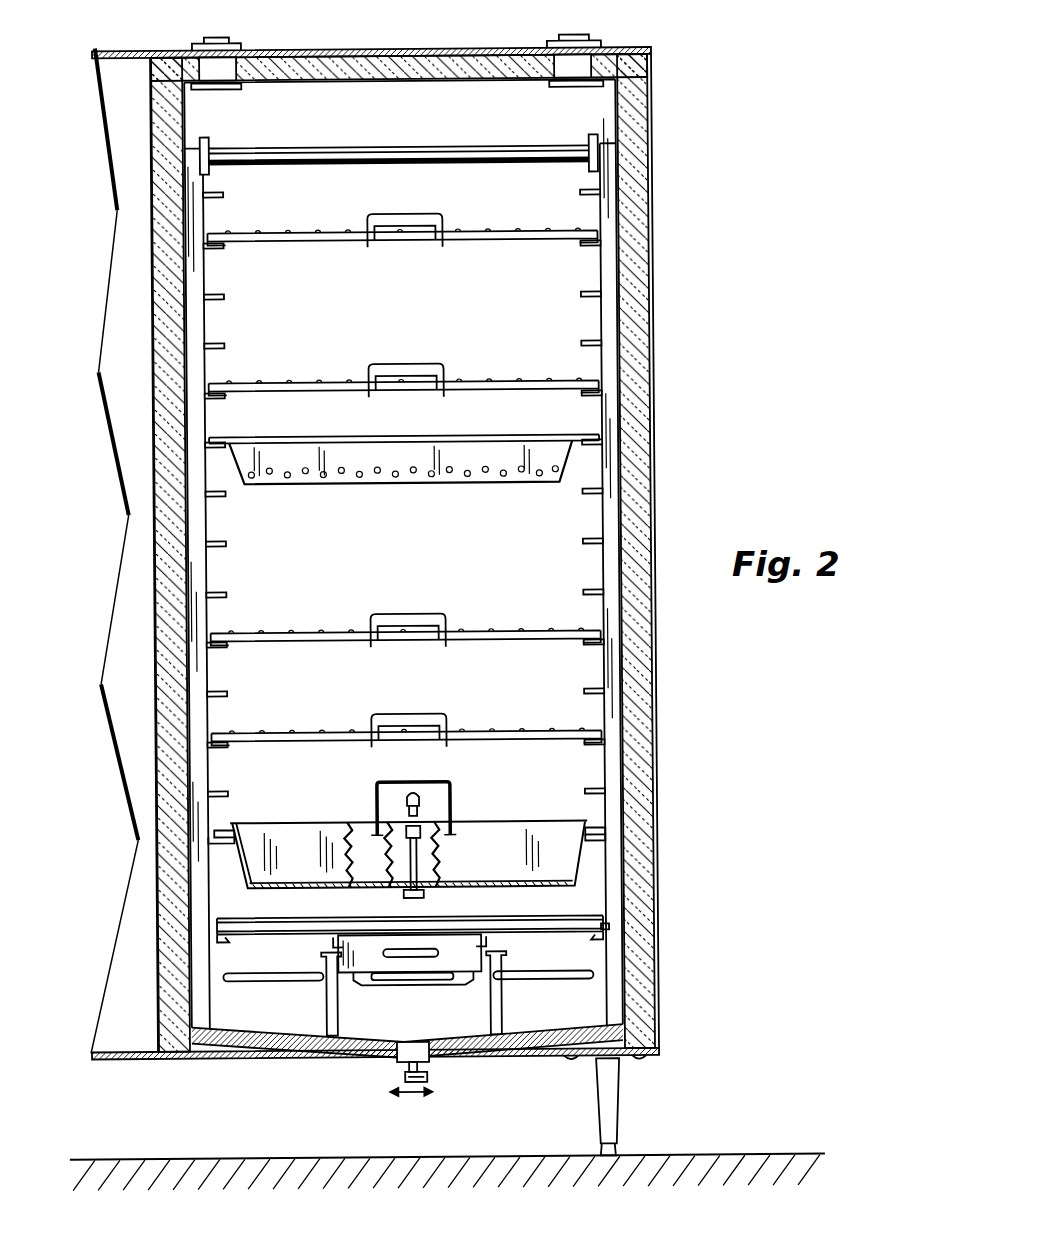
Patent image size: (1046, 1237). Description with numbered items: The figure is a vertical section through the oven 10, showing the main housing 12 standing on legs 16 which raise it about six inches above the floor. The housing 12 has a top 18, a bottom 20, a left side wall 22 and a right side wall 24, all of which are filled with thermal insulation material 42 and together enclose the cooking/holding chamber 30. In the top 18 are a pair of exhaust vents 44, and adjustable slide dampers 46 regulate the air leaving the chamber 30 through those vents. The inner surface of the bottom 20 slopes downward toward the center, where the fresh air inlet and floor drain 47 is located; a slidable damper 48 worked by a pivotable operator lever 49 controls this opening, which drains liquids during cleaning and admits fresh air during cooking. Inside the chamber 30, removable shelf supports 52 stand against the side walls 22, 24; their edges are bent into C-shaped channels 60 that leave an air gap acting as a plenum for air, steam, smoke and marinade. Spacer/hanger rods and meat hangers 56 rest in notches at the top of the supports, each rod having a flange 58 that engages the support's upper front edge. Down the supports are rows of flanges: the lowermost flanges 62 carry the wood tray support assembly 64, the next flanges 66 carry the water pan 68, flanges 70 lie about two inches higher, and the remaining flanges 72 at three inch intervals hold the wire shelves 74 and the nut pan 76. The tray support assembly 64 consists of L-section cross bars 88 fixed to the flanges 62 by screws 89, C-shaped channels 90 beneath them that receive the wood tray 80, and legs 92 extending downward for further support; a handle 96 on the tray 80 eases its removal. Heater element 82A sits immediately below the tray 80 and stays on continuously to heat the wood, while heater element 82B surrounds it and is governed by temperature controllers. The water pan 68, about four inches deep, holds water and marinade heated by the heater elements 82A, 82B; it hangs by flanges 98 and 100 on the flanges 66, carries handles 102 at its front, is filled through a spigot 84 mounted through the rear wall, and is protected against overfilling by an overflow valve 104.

The oven 10 is at (108, 893).
The main housing 12 is at (424, 557).
The legs 16 is at (612, 1090).
The top 18 is at (386, 50).
The bottom 20 is at (220, 1058).
The left side wall 22 is at (157, 448).
The right side wall 24 is at (657, 654).
The cooking/holding chamber 30 is at (546, 524).
The thermal insulation material 42 is at (638, 410).
The exhaust vents 44 is at (224, 64).
The adjustable slide dampers 46 is at (223, 36).
The fresh air inlet and floor drain 47 is at (434, 1060).
The slidable damper 48 is at (400, 1072).
The pivotable operator lever 49 is at (393, 1084).
The removable shelf supports 52 is at (606, 249).
The spacer/hanger rods and meat hangers 56 is at (362, 147).
The flange 58 is at (212, 143).
The C-shaped channels 60 is at (190, 624).
The lowermost flanges 62 is at (216, 942).
The wood tray support assembly 64 is at (246, 907).
The flanges 66 is at (228, 838).
The water pan 68 is at (473, 846).
The flanges 70 is at (590, 788).
The flanges 72 is at (580, 192).
The wire shelves 74 is at (452, 245).
The nut pan 76 is at (397, 486).
The wood tray 80 is at (394, 930).
The heater element 82A is at (400, 984).
The heater element 82B is at (245, 979).
The spigot 84 is at (406, 808).
The cross bars 88 is at (527, 918).
The screws 89 is at (607, 928).
The C-shaped channels 90 is at (337, 940).
The legs 92 is at (333, 1017).
The handle 96 is at (425, 950).
The flanges 98 is at (223, 830).
The flanges 100 is at (232, 849).
The handles 102 is at (449, 783).
The overflow valve 104 is at (414, 852).